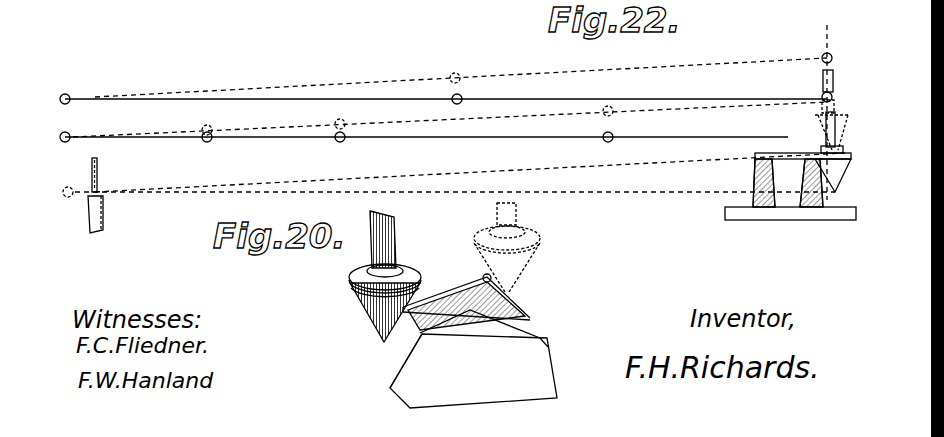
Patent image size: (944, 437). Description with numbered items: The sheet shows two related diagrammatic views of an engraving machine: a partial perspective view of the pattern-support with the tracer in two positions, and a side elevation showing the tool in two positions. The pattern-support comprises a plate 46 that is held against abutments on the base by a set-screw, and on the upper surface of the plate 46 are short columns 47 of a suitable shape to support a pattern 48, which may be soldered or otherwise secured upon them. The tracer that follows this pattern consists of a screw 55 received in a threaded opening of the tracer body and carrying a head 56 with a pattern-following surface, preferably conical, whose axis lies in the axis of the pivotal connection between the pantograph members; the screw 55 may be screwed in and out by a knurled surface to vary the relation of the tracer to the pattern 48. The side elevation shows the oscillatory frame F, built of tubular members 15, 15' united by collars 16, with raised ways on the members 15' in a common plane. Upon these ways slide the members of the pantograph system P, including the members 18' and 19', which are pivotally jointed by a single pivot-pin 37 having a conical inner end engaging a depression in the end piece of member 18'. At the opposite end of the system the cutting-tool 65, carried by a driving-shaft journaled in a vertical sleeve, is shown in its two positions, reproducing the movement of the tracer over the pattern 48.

In FIG. 22, the tubular member 15 is at (152, 149).
In FIG. 22, the tubular member 15' is at (468, 133).
In FIG. 22, the collar 16 is at (206, 141).
In FIG. 22, the pantograph member 18' is at (443, 81).
In FIG. 22, the pantograph member 19' is at (639, 88).
In FIG. 22, the pivot-pin 37 is at (462, 97).
In FIG. 22, the pantograph system P is at (594, 88).
In FIG. 22, the oscillatory frame F is at (443, 131).
In FIG. 22, the cutting-tool 65 is at (92, 172).
In FIG. 22, the screw 55 is at (822, 82).
In FIG. 20, the screw 55 is at (384, 258).
In FIG. 22, the head 56 is at (822, 117).
In FIG. 20, the head 56 is at (421, 287).
In FIG. 22, the pattern 48 is at (805, 161).
In FIG. 20, the pattern 48 is at (518, 313).
In FIG. 22, the column 47 is at (757, 178).
In FIG. 20, the column 47 is at (393, 378).
In FIG. 22, the plate 46 is at (725, 217).